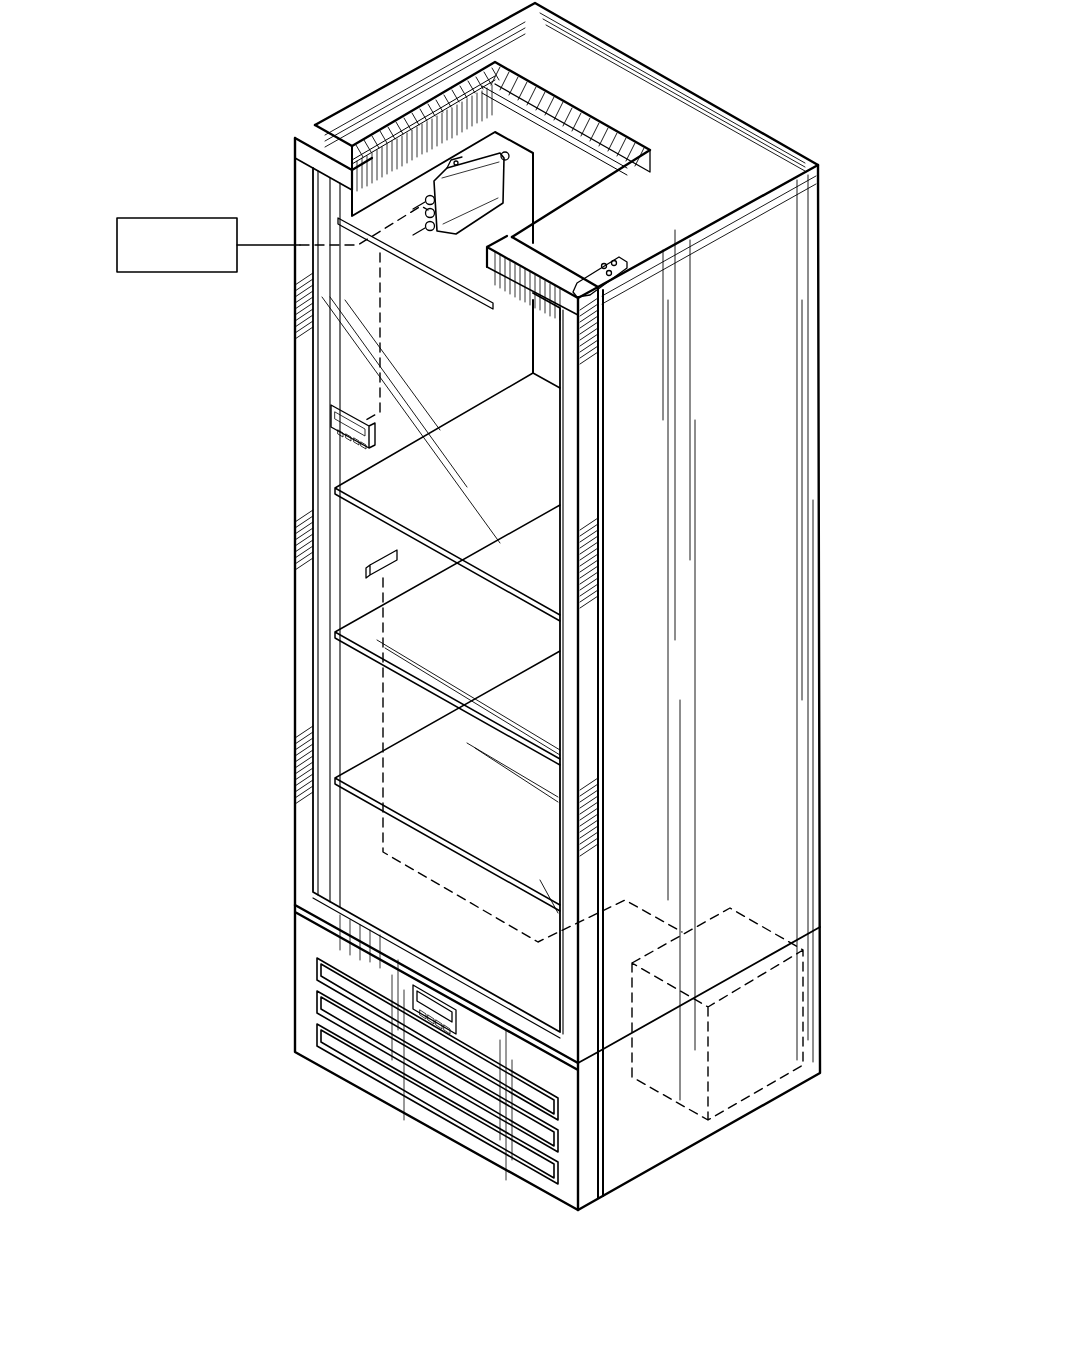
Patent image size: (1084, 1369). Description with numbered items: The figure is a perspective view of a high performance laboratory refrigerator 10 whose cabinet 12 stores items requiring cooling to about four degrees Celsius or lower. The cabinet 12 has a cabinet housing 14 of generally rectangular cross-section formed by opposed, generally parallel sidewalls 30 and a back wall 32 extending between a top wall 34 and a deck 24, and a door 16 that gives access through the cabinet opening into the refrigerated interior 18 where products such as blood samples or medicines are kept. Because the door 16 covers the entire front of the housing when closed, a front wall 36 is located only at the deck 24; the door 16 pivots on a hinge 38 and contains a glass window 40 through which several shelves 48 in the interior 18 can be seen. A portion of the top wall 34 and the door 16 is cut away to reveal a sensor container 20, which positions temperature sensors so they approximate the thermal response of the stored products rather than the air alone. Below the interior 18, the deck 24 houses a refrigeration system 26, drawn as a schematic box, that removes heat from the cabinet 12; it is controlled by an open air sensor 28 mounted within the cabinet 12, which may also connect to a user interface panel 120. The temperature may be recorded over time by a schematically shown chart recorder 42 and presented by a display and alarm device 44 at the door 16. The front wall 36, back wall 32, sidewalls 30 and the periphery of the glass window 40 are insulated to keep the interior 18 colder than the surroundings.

The high performance laboratory refrigerator 10 is at (185, 68).
The cabinet 12 is at (830, 470).
The cabinet housing 14 is at (810, 542).
The door 16 is at (296, 481).
The refrigerated interior 18 is at (546, 175).
The sensor container 20 is at (498, 148).
The deck 24 is at (824, 1025).
The refrigeration system 26 is at (745, 915).
The open air sensor 28 is at (379, 572).
The sidewalls 30 is at (375, 213).
The back wall 32 is at (573, 187).
The top wall 34 is at (757, 135).
The front wall 36 is at (296, 938).
The hinge 38 is at (590, 268).
The glass window 40 is at (437, 267).
The chart recorder 42 is at (135, 218).
The display and alarm device 44 is at (373, 450).
The shelves 48 is at (375, 511).
The user interface panel 120 is at (432, 1000).